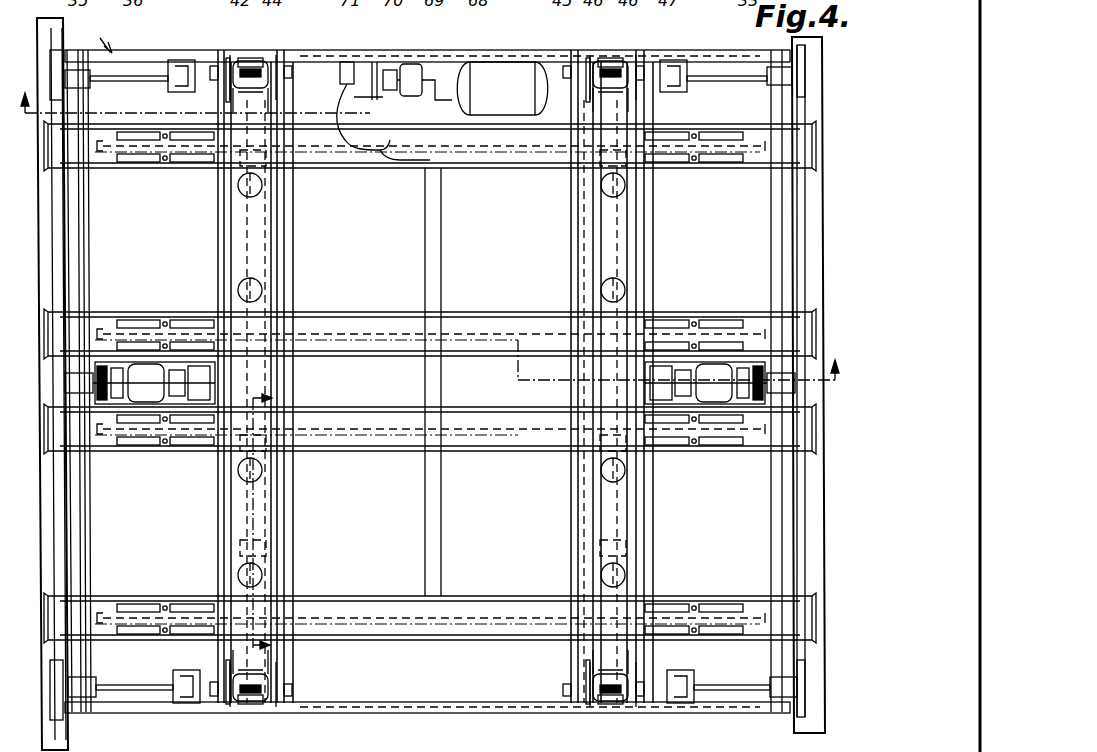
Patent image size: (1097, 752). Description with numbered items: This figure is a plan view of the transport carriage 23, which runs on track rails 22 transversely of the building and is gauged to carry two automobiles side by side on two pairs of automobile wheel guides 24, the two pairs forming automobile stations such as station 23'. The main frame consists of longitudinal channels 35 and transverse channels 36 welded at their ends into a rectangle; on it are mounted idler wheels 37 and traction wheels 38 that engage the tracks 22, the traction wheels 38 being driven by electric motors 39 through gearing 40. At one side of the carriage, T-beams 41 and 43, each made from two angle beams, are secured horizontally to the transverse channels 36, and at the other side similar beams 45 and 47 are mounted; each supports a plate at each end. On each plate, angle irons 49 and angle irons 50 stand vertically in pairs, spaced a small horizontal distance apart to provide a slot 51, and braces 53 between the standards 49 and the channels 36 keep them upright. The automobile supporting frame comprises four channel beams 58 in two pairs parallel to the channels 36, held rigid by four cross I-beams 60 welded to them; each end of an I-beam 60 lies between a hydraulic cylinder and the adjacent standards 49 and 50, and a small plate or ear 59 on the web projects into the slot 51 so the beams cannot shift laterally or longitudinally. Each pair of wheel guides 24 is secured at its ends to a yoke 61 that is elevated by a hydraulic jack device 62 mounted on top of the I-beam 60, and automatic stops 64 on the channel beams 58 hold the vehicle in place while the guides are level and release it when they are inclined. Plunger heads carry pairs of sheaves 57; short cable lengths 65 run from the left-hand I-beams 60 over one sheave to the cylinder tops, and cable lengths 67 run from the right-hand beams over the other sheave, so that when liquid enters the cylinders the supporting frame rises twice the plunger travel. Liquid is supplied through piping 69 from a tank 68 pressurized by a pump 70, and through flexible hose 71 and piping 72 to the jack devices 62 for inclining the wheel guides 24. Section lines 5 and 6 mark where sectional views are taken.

The section line 5- 5 is at (428, 238).
The section line 6- 6 is at (260, 523).
The track rails 22 is at (56, 532).
The transport carriage 23 is at (93, 36).
The automobile station 23' is at (734, 527).
The automobile wheel guides 24 is at (108, 604).
The longitudinal channels 35 is at (70, 258).
The transverse channels 36 is at (772, 714).
The idler wheels 37 is at (806, 680).
The traction wheels 38 is at (805, 390).
The electric motors 39 is at (710, 402).
The gearing 40 is at (762, 402).
The T-beam 41 is at (218, 520).
The T-beam 43 is at (288, 524).
The beam 45 is at (565, 500).
The beam 47 is at (652, 486).
The angle irons 49 is at (568, 712).
The angle irons 50 is at (212, 700).
The slot 51 is at (572, 702).
The braces 53 is at (712, 713).
The sheaves 57 is at (622, 686).
The channel beams 58 is at (388, 608).
The plate or ear 59 is at (652, 710).
The cross I-beams 60 is at (596, 554).
The yoke 61 is at (622, 534).
The hydraulic jack device 62 is at (626, 575).
The automatic stops 64 is at (722, 641).
The cable lengths 65 is at (592, 708).
The cable lengths 67 is at (646, 710).
The tank 68 is at (496, 70).
The piping 69 is at (290, 266).
The pump 70 is at (388, 62).
The flexible hose 71 is at (338, 128).
The piping 72 is at (372, 148).